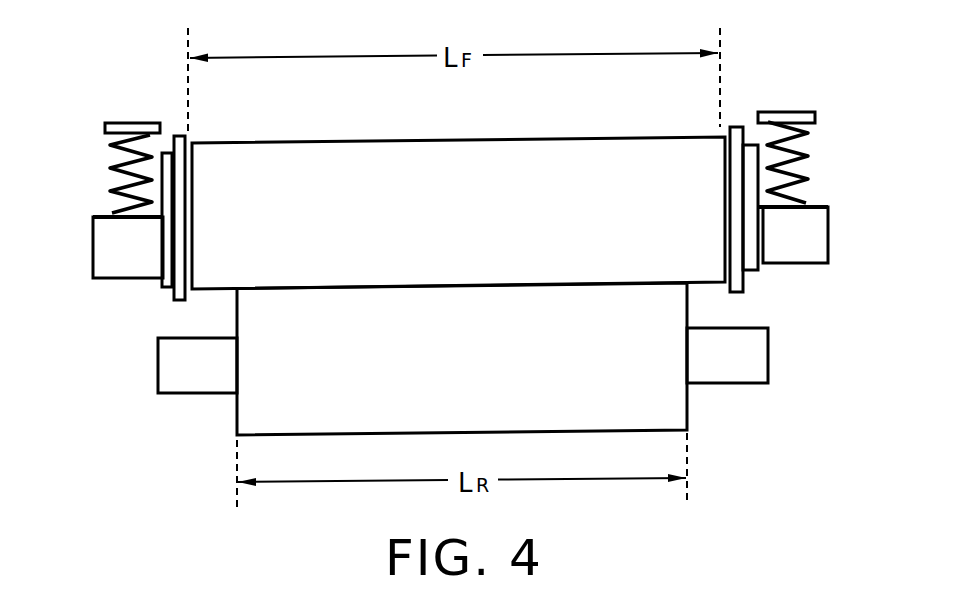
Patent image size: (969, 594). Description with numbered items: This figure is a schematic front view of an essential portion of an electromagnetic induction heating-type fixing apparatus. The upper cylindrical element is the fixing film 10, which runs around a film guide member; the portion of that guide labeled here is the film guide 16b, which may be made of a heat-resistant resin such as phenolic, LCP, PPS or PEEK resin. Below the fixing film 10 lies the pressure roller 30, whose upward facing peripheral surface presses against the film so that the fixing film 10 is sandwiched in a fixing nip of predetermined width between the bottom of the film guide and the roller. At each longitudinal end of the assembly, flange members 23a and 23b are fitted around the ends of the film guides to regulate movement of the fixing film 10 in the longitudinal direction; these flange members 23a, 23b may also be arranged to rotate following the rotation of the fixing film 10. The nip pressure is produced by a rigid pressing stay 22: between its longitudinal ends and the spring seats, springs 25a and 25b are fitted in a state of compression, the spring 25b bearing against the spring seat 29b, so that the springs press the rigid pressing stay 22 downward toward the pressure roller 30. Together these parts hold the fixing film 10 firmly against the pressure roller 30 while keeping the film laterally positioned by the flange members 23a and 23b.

The fixing film 10 is at (553, 137).
The pressure roller 30 is at (688, 400).
The rigid pressing stay 22 is at (808, 205).
The flange member 23a is at (180, 134).
The flange member 23b is at (735, 125).
The spring 25a is at (110, 160).
The spring 25b is at (802, 138).
The spring seat 29b is at (118, 122).
The film guide 16b is at (758, 268).